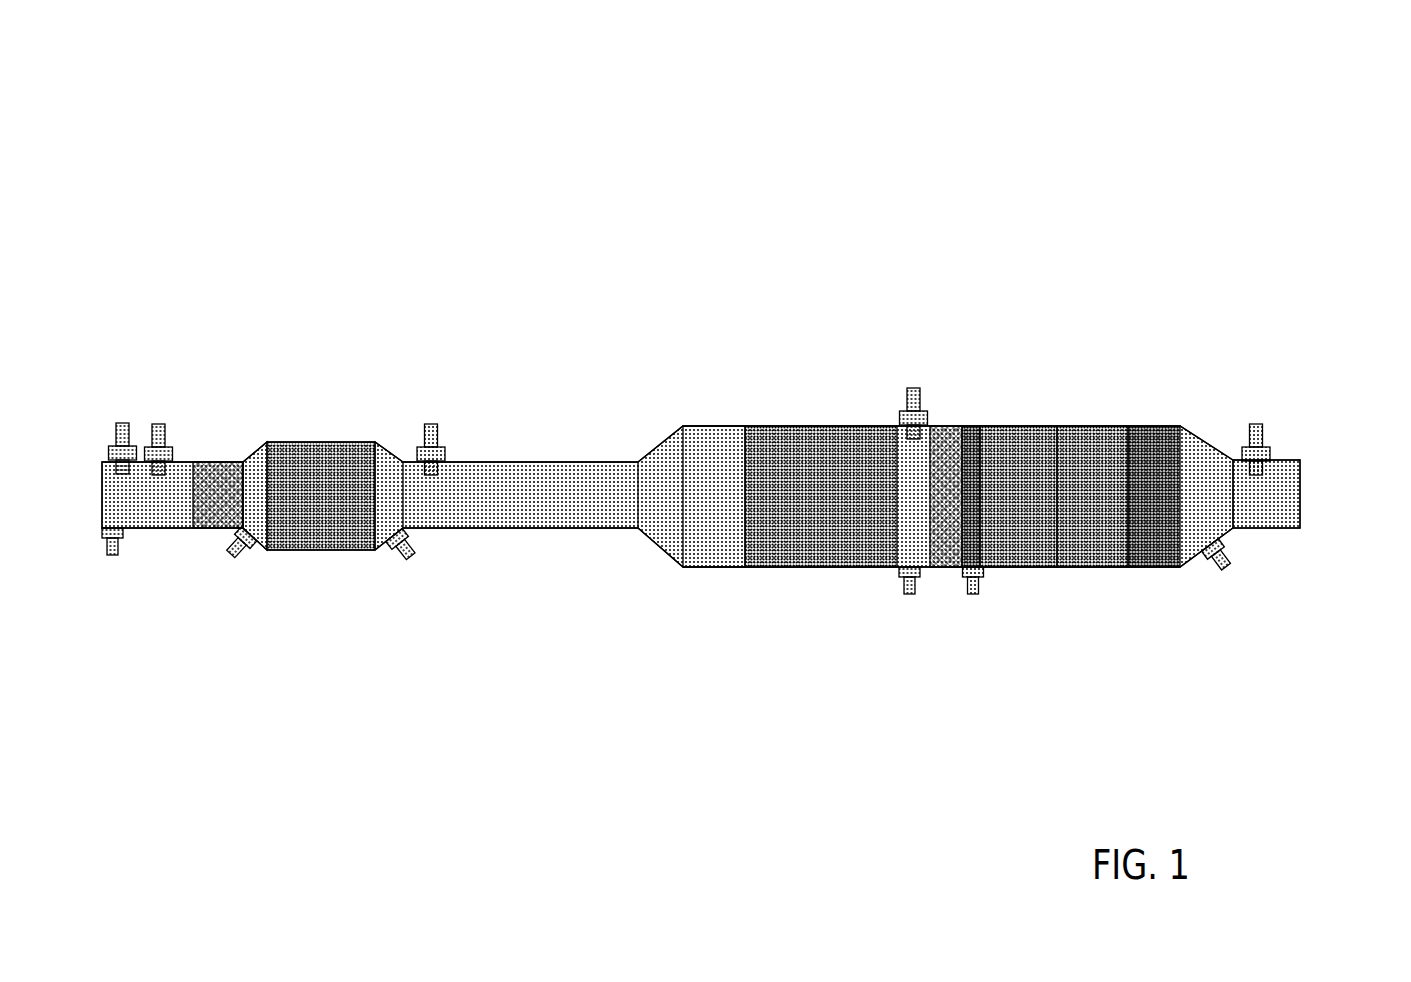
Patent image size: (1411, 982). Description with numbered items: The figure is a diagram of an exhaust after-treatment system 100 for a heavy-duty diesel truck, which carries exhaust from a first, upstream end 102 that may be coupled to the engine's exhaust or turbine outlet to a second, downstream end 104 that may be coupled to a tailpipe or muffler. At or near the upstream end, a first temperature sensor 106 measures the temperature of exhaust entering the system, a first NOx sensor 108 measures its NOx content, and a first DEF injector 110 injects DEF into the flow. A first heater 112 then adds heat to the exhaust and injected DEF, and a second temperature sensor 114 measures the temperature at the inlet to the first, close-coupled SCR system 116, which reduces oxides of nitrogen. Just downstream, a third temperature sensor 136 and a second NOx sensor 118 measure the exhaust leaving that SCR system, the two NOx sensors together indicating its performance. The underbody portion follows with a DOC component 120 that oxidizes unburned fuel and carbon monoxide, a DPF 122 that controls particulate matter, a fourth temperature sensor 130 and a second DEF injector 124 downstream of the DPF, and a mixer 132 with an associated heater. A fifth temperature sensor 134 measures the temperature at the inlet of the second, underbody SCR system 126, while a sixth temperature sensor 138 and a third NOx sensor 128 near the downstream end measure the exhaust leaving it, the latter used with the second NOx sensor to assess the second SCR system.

The exhaust after-treatment system 100 is at (160, 138).
The first, upstream end 102 is at (92, 497).
The second, downstream end 104 is at (1307, 490).
The first temperature sensor 106 is at (112, 556).
The first NOx sensor 108 is at (122, 423).
The first DEF injector 110 is at (159, 418).
The first heater 112 is at (222, 482).
The second temperature sensor 114 is at (233, 557).
The first, close-coupled SCR system 116 is at (320, 535).
The second NOx sensor 118 is at (433, 422).
The DOC component 120 is at (706, 432).
The DPF 122 is at (813, 440).
The second DEF injector 124 is at (908, 382).
The second, underbody SCR system 126 is at (1075, 440).
The third NOx sensor 128 is at (1255, 424).
The fourth temperature sensor 130 is at (908, 598).
The mixer 132 is at (948, 440).
The fifth temperature sensor 134 is at (972, 598).
The third temperature sensor 136 is at (408, 560).
The sixth temperature sensor 138 is at (1222, 570).